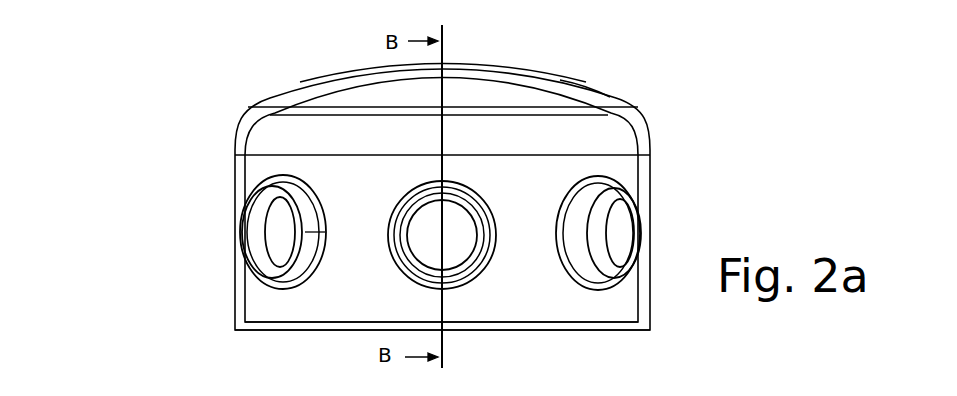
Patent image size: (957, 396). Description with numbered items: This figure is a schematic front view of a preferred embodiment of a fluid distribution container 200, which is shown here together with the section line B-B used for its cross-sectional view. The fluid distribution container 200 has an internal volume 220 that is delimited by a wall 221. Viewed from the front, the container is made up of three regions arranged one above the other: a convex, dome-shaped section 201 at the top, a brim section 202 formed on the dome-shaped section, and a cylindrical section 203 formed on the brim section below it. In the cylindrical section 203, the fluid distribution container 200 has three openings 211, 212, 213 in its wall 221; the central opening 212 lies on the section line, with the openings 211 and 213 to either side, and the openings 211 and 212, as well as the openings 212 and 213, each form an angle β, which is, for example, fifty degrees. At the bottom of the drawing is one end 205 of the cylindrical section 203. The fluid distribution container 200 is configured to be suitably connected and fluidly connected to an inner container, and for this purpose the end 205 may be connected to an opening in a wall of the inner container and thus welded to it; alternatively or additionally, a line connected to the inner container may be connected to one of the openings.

The fluid distribution container 200 is at (155, 78).
The convex, dome-shaped section 201 is at (310, 82).
The brim section 202 is at (237, 118).
The cylindrical section 203 is at (233, 180).
The end of the cylindrical section 205 is at (255, 342).
The opening 211 is at (330, 217).
The opening 212 is at (395, 257).
The opening 213 is at (558, 222).
The internal volume 220 is at (477, 94).
The wall 221 is at (568, 90).